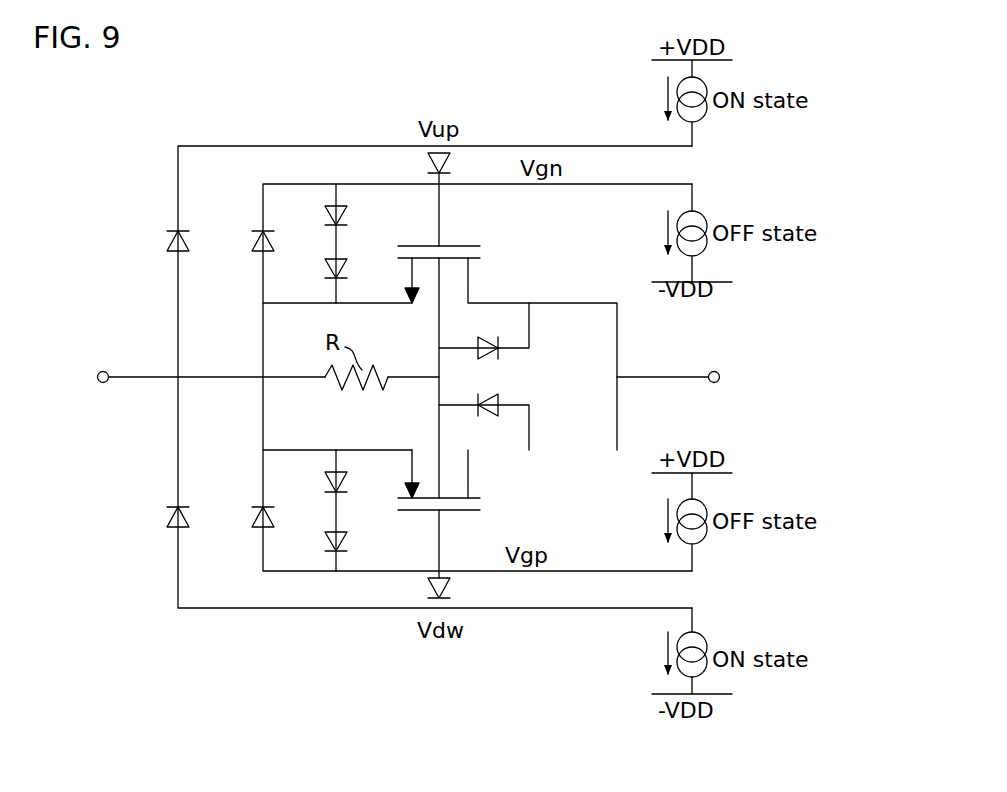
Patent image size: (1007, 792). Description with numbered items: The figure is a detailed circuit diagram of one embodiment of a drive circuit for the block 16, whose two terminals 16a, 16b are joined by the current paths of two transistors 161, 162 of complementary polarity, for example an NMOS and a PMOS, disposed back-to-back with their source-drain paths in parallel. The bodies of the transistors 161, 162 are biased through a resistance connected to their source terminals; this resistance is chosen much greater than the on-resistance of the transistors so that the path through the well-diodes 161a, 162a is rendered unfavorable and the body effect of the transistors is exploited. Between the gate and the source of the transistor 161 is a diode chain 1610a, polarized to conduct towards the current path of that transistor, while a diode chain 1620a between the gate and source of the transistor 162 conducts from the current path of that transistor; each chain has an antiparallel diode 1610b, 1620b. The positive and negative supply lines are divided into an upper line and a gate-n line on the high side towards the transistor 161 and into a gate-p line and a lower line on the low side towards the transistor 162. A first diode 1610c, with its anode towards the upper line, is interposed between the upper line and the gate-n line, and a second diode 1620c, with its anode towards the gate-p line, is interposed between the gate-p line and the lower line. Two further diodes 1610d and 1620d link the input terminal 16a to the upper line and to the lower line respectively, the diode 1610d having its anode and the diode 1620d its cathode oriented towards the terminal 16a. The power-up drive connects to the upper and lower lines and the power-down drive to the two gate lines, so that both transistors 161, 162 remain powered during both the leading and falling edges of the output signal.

The block 16 is at (243, 108).
The input terminal 16a is at (104, 368).
The terminal 16b is at (723, 369).
The transistor 161 is at (480, 242).
The transistor 162 is at (472, 516).
The well-diode 161a is at (500, 358).
The well-diode 162a is at (500, 401).
The diode chain 1610a is at (351, 246).
The diode 1610b is at (252, 230).
The first diode 1610c is at (451, 164).
The diode 1610d is at (167, 229).
The diode chain 1620a is at (357, 512).
The diode 1620b is at (252, 528).
The second diode 1620c is at (452, 596).
The diode 1620d is at (163, 524).